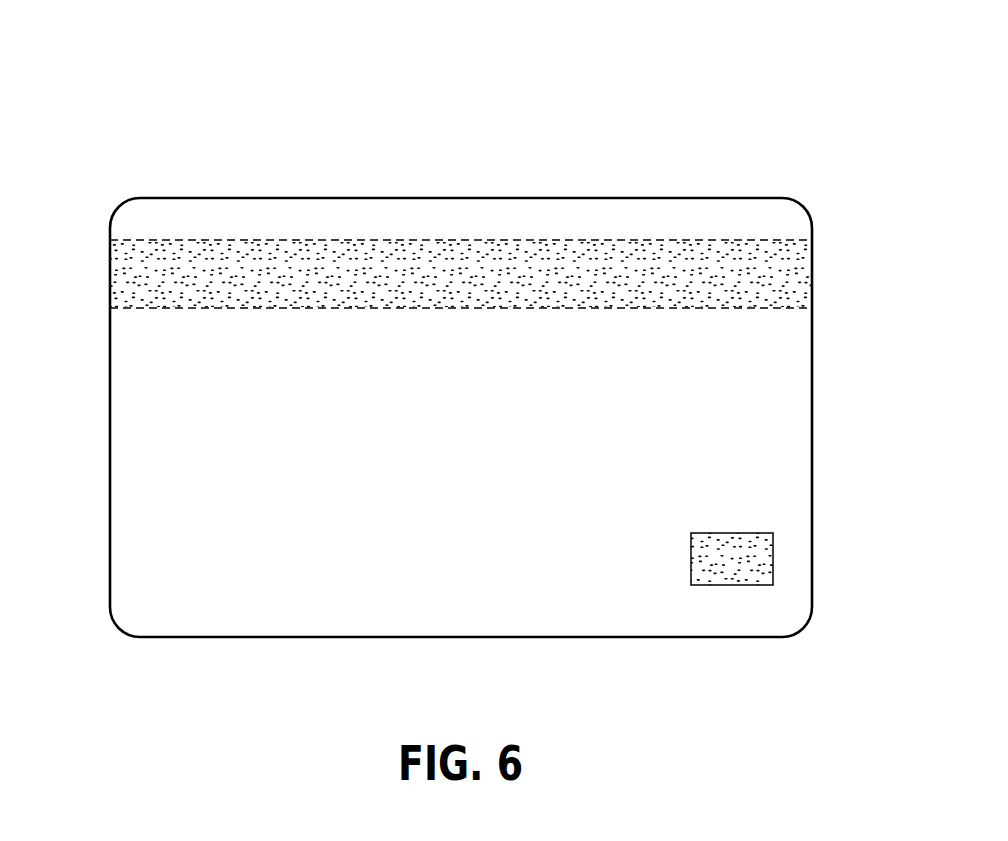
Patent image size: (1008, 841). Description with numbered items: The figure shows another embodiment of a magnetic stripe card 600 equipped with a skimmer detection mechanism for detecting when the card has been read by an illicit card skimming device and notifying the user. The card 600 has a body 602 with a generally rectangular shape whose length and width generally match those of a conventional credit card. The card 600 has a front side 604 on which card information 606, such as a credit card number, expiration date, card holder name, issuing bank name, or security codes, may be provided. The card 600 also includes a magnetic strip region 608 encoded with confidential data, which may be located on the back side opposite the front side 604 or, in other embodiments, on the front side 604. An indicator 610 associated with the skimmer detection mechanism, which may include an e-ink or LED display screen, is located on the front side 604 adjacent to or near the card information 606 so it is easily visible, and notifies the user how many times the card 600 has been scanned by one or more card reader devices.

The magnetic stripe card 600 is at (461, 331).
The body 602 is at (512, 197).
The front side 604 is at (766, 438).
The card information 606 is at (140, 462).
The magnetic strip region 608 is at (783, 277).
The indicator 610 is at (672, 565).